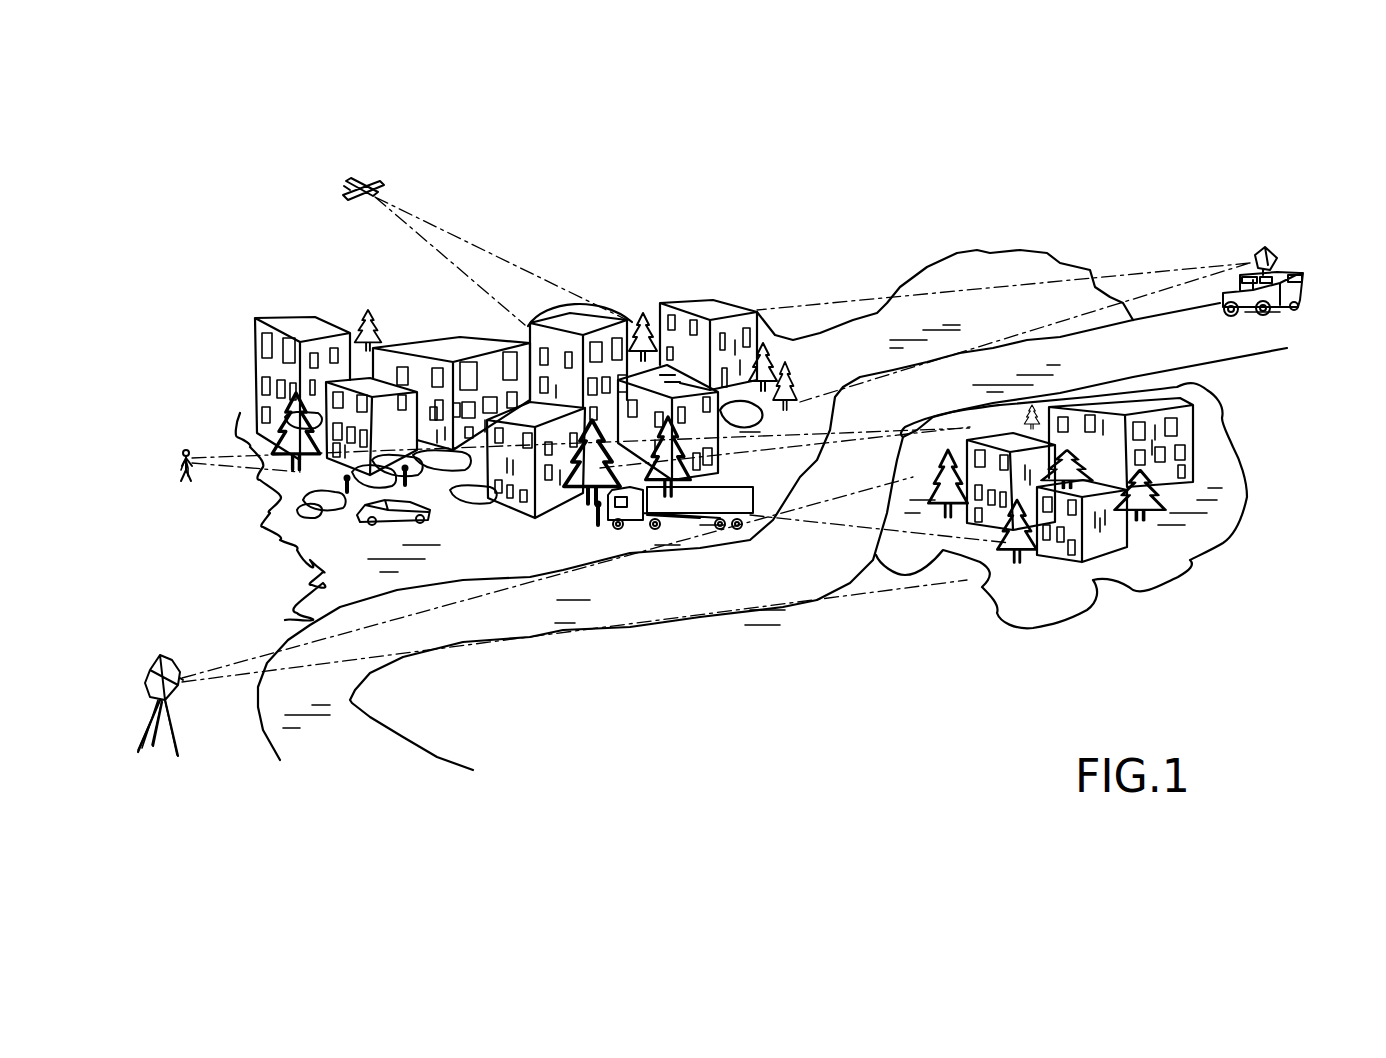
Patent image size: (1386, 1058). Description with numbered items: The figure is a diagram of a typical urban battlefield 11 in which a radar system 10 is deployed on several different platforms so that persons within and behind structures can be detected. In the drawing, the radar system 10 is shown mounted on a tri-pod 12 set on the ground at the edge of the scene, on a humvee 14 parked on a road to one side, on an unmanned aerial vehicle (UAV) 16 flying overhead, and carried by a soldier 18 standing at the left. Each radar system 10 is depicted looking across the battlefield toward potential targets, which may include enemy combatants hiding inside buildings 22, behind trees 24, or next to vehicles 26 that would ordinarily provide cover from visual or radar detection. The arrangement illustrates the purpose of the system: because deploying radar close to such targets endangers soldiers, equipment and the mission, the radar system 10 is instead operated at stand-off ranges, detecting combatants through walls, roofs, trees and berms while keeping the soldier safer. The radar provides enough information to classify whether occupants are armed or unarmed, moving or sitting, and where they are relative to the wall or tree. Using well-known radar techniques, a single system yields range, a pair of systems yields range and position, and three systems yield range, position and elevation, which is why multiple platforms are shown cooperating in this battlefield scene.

The radar system 10 is at (1262, 248).
The urban battlefield 11 is at (770, 183).
The tri-pod 12 is at (128, 740).
The humvee 14 is at (1312, 250).
The unmanned aerial vehicle (UAV) 16 is at (387, 172).
The soldier 18 is at (168, 430).
The buildings 22 is at (290, 312).
The trees 24 is at (948, 518).
The vehicles 26 is at (733, 510).